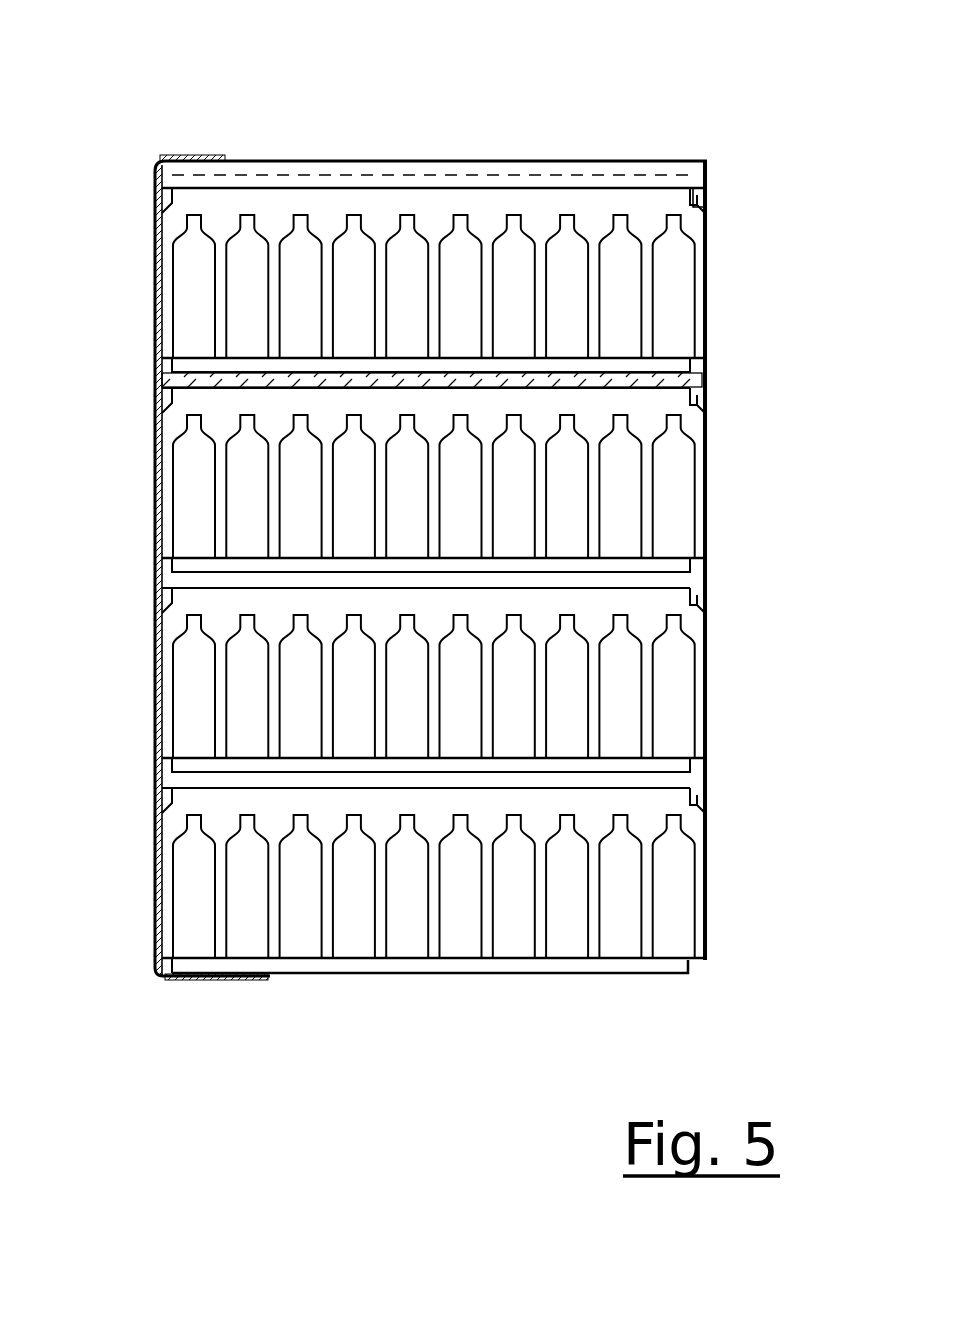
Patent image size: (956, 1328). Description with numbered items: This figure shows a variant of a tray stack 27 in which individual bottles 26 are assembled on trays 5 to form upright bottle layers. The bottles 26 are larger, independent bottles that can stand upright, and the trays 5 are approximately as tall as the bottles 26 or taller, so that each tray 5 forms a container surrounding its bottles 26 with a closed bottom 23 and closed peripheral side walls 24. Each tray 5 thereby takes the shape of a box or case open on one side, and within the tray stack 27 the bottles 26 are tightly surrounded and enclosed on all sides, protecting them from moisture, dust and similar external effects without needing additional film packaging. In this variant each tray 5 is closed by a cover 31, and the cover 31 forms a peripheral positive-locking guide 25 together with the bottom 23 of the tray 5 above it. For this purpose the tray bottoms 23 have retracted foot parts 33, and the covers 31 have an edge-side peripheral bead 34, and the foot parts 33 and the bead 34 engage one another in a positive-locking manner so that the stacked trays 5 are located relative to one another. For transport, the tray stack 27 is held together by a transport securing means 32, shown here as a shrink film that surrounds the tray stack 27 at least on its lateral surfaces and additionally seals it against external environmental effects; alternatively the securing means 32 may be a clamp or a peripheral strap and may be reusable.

The tray stack 27 is at (712, 154).
The side walls 24 is at (707, 287).
The transport securing means 32 is at (155, 354).
The cover 31 is at (259, 160).
The peripheral bead 34 is at (166, 156).
The positive-locking guide 25 is at (704, 795).
The tray 5 is at (497, 586).
The bottom 23 is at (548, 958).
The foot parts 33 is at (410, 975).
The bottles 26 is at (297, 978).